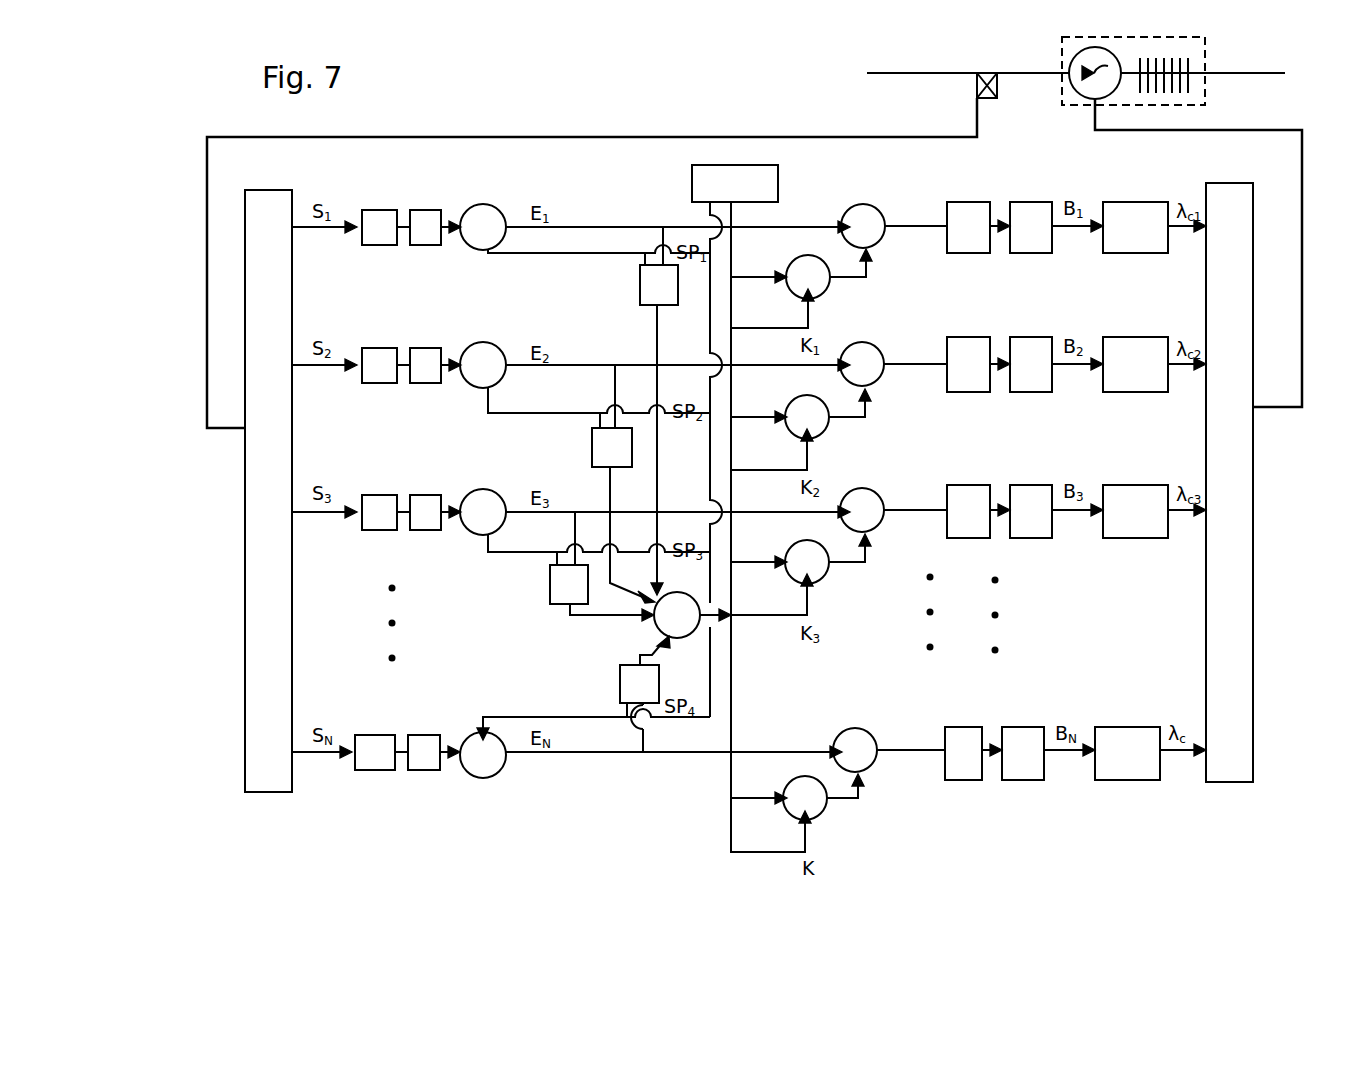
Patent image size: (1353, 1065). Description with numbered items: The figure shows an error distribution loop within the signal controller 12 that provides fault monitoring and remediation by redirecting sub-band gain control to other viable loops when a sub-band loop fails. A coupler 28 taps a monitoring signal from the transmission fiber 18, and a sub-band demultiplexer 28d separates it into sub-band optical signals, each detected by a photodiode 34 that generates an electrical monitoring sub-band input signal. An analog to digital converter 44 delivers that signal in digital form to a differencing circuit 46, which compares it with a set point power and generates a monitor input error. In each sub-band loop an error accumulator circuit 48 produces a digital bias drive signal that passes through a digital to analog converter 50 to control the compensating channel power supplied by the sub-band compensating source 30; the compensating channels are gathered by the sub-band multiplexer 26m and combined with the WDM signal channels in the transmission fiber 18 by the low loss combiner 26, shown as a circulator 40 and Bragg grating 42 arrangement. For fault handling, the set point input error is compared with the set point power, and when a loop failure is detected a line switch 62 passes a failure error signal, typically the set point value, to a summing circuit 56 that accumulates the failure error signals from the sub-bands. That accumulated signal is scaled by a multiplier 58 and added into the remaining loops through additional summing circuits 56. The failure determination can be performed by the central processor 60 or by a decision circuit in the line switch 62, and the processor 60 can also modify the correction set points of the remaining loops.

The controller 12 is at (1150, 851).
The transmission fiber 18 is at (912, 75).
The low loss combiner 26 is at (1205, 45).
The coupler 28 is at (975, 78).
The sub-band demultiplexer 28d is at (245, 728).
The sub-band multiplexer 26m is at (1255, 703).
The sub-band compensating source 30 is at (1135, 250).
The photodiode 34 is at (380, 203).
The circulator 40 is at (1072, 62).
The Bragg grating 42 is at (1170, 95).
The analog to digital converter 44 is at (424, 211).
The differencing circuit 46 is at (497, 208).
The error accumulator circuit 48 is at (970, 248).
The digital to analog converter 50 is at (1036, 250).
The summing circuit 56 is at (878, 209).
The multiplier 58 is at (790, 262).
The central processor 60 is at (692, 180).
The line switch 62 is at (642, 301).